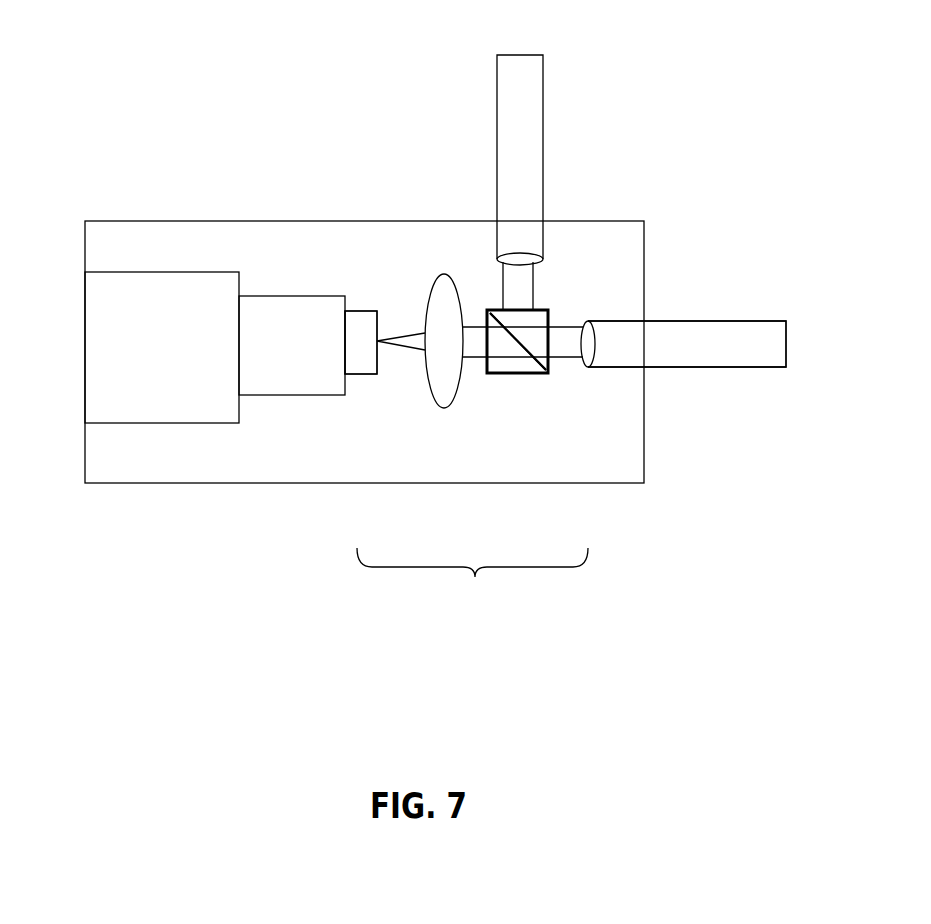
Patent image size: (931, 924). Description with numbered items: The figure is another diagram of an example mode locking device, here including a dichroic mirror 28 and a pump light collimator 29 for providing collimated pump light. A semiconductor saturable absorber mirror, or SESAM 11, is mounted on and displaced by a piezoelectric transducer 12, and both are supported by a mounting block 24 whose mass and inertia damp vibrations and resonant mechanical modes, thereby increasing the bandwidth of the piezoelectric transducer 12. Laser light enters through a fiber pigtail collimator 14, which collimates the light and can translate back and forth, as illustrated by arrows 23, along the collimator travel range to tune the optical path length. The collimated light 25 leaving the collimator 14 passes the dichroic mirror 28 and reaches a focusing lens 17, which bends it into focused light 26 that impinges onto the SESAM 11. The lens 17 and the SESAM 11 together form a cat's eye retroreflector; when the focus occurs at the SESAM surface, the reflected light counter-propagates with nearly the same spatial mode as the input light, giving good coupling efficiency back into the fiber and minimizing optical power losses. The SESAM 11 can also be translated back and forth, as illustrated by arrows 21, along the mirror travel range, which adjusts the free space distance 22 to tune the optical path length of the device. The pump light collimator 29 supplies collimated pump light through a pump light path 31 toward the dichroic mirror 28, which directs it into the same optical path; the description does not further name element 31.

The semiconductor saturable absorber mirror 11 is at (358, 364).
The piezoelectric transducer 12 is at (285, 367).
The fiber pigtail collimator 14 is at (628, 367).
The focusing lens 17 is at (447, 385).
The arrows 21 is at (362, 311).
The free space distance 22 is at (472, 583).
The arrows 23 is at (622, 321).
The mounting block 24 is at (165, 365).
The collimated light 25 is at (565, 358).
The focused light 26 is at (408, 343).
The dichroic mirror 28 is at (552, 320).
The pump light collimator 29 is at (497, 120).
The light guide 31 is at (505, 282).